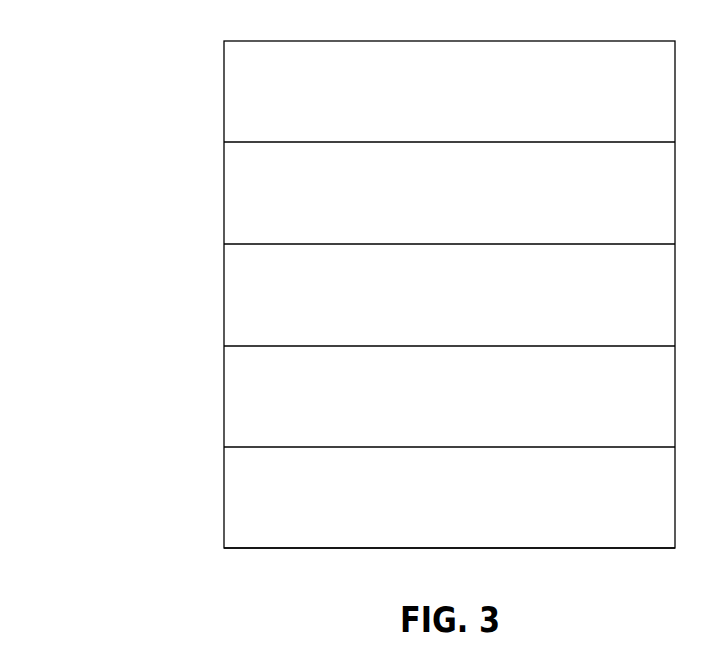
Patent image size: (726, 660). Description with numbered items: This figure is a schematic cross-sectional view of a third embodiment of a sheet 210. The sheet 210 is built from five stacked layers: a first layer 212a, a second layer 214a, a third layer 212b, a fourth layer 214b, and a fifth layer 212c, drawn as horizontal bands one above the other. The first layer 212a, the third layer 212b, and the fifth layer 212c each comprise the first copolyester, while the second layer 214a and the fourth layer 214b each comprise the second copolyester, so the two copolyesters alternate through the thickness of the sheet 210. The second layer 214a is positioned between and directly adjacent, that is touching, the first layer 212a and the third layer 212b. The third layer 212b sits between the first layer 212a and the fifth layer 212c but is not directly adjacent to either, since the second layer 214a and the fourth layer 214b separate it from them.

The sheet 210 is at (180, 93).
The first layer 212a is at (482, 107).
The second layer 214a is at (482, 210).
The third layer 212b is at (482, 310).
The fourth layer 214b is at (482, 412).
The fifth layer 212c is at (482, 513).